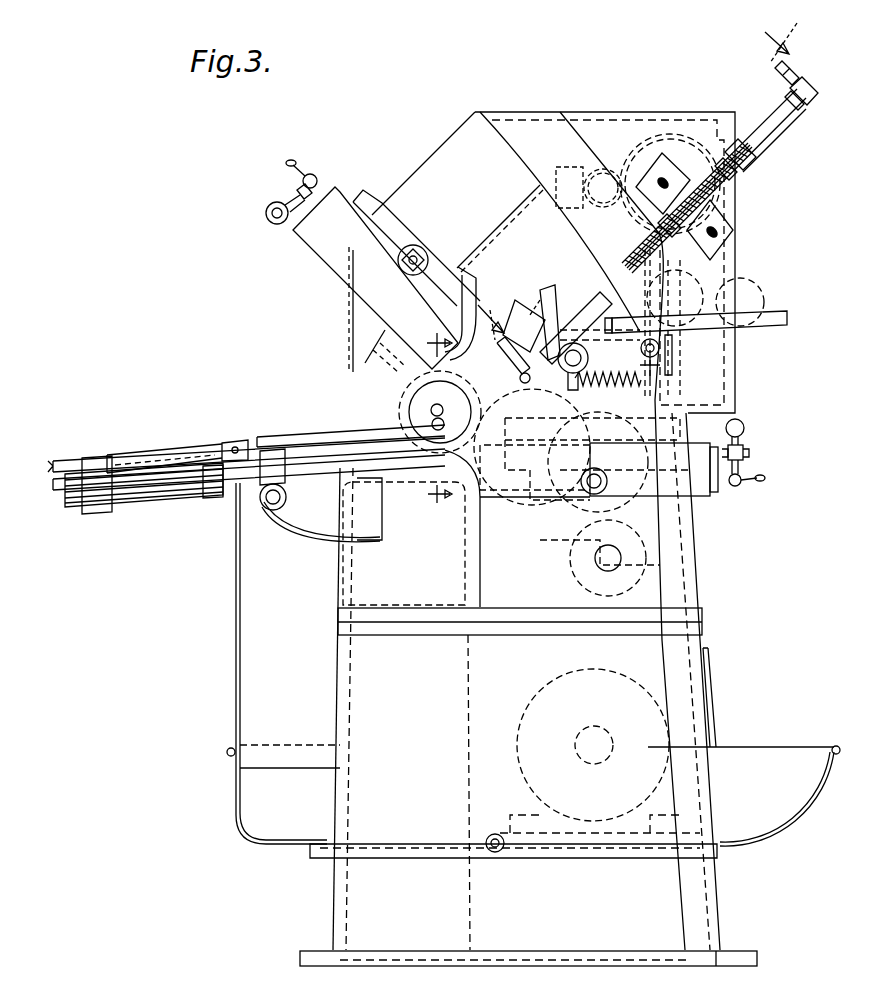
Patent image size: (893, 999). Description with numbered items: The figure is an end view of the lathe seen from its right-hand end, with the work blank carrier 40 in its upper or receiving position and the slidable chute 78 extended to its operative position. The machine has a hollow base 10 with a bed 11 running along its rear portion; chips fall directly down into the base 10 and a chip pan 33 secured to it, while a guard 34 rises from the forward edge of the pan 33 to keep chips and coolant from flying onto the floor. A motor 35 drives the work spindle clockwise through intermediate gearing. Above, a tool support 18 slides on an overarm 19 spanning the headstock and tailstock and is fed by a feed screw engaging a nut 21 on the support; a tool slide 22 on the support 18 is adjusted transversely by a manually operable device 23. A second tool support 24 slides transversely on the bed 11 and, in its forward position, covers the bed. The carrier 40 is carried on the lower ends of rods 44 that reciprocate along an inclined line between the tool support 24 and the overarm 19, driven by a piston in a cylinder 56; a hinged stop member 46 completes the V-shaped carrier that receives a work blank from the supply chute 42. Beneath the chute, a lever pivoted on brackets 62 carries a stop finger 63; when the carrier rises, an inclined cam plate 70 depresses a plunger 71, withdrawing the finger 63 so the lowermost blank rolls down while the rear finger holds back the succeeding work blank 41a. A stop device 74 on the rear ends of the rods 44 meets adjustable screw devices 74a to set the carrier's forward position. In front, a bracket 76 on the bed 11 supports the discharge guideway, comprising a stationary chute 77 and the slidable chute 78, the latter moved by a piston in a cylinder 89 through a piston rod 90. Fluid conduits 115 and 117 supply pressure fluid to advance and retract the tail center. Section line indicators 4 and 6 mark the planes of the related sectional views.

The hollow base 10 is at (340, 700).
The bed 11 is at (480, 558).
The tool support 18 is at (392, 270).
The overarm 19 is at (430, 163).
The nut 21 is at (423, 247).
The tool slide 22 is at (333, 253).
The manually operable device 23 is at (292, 164).
The second tool support 24 is at (667, 487).
The chip pan 33 is at (255, 838).
The guard 34 is at (238, 628).
The motor 35 is at (548, 688).
The work blank carrier 40 is at (515, 378).
The succeeding work blank 41a is at (697, 290).
The supply chute 42 is at (775, 311).
The rods 44 is at (775, 138).
The stop member 46 is at (515, 318).
The cylinder 56 is at (750, 180).
The brackets 62 is at (668, 340).
The stop finger 63 is at (600, 300).
The inclined cam plate 70 is at (548, 300).
The plunger 71 is at (600, 428).
The stop device 74 is at (797, 72).
The adjustable screw devices 74a is at (672, 168).
The bracket 76 is at (307, 527).
The stationary chute 77 is at (165, 455).
The slidable chute 78 is at (293, 437).
The cylinder 89 is at (150, 495).
The piston rod 90 is at (318, 480).
The fluid conduit 115 is at (430, 408).
The fluid conduit 117 is at (430, 425).
The section line 4 is at (637, 174).
The section line 6 is at (431, 419).